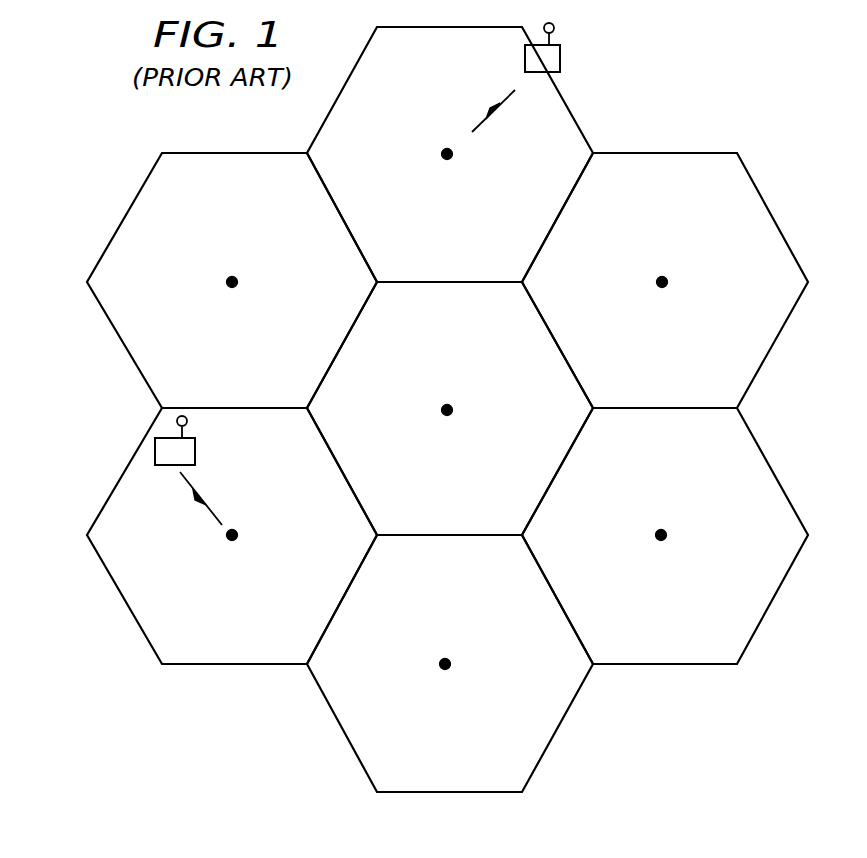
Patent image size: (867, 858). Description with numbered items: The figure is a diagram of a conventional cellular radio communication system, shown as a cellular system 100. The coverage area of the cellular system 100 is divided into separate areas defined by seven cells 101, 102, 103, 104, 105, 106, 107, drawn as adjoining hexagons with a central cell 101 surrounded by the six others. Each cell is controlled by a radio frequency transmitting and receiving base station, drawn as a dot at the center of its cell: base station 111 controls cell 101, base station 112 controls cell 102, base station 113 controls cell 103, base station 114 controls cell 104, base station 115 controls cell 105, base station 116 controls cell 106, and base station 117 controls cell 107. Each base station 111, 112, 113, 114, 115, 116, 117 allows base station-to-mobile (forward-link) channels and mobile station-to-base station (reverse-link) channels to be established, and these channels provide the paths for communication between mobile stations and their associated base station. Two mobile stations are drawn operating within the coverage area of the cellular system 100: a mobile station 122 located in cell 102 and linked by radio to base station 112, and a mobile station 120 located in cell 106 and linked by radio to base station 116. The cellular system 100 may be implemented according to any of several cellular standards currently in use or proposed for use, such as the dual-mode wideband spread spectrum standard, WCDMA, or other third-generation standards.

The cellular system 100 is at (98, 160).
The cell 101 is at (464, 493).
The cell 102 is at (466, 237).
The cell 103 is at (677, 365).
The cell 104 is at (677, 626).
The cell 105 is at (464, 752).
The cell 106 is at (254, 625).
The cell 107 is at (254, 365).
The base station 111 is at (445, 401).
The base station 112 is at (443, 146).
The base station 113 is at (662, 273).
The base station 114 is at (662, 526).
The base station 115 is at (443, 655).
The base station 116 is at (240, 535).
The base station 117 is at (230, 273).
The mobile station 120 is at (196, 452).
The mobile station 122 is at (561, 58).